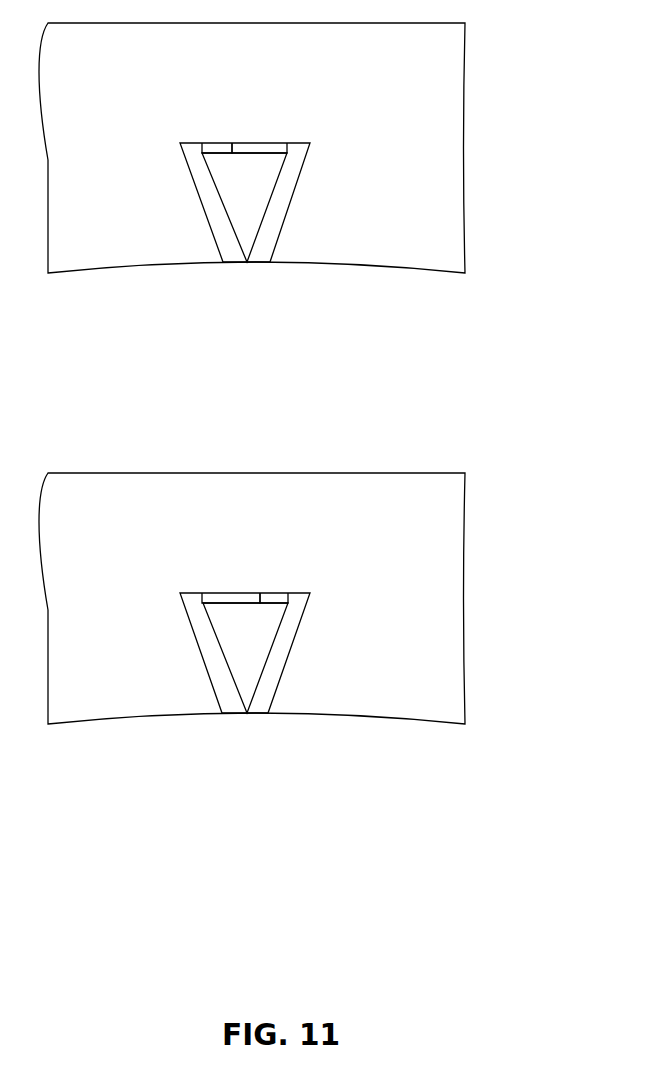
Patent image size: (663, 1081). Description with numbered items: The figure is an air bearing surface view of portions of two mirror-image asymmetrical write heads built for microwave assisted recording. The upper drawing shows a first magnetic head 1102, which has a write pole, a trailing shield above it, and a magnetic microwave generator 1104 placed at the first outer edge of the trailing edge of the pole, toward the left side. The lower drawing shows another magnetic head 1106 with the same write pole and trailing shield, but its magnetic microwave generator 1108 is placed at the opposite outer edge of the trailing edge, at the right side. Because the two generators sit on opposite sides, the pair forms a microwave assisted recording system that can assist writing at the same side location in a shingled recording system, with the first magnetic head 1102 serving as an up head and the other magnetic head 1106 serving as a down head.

The first magnetic head 1102 is at (465, 60).
The second magnetic head 1106 is at (465, 483).
The magnetic microwave generator 1104 is at (218, 150).
The magnetic microwave generator 1108 is at (281, 598).